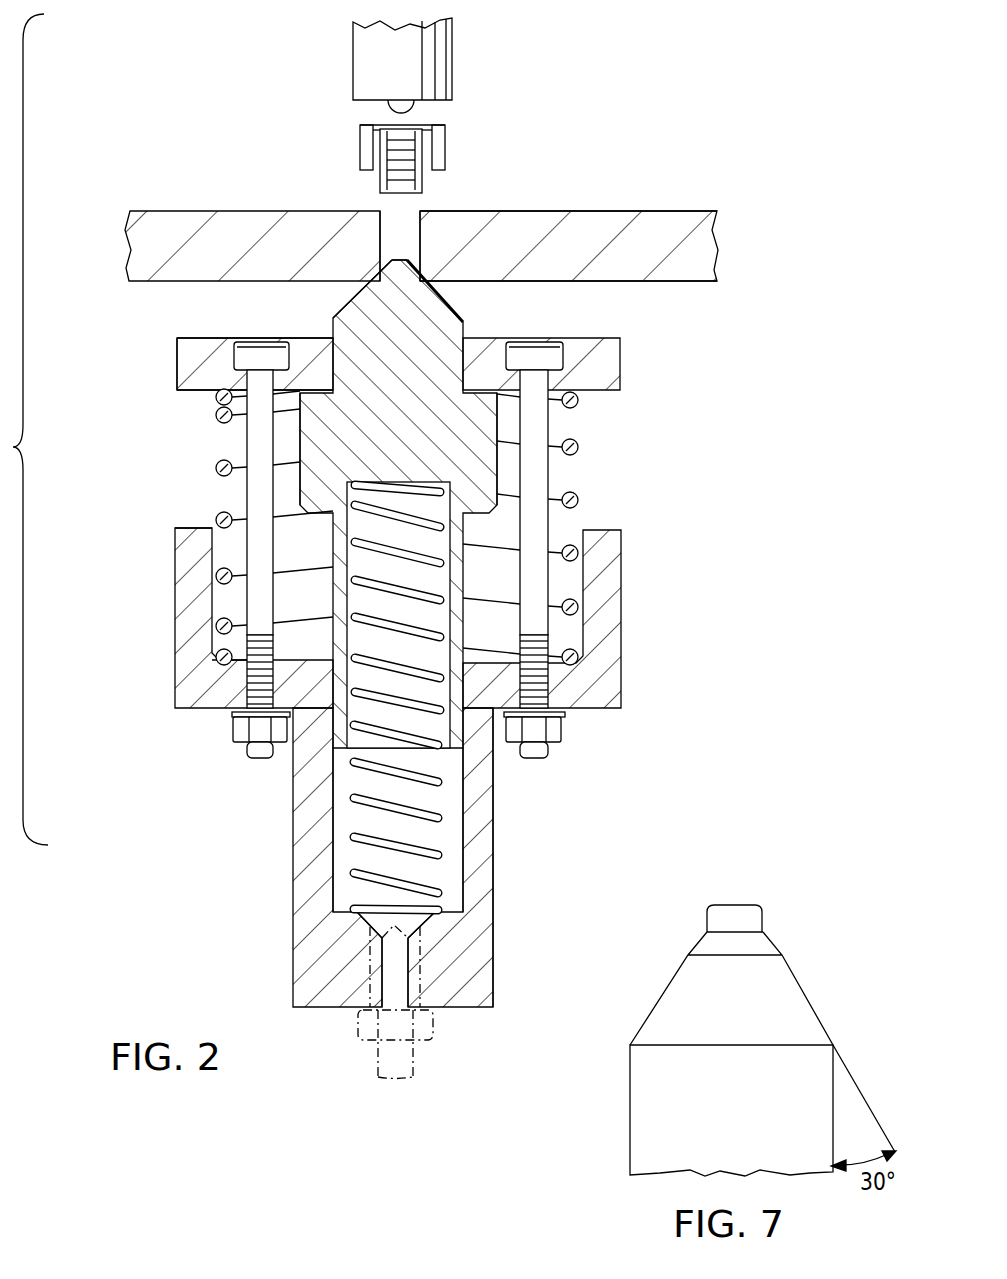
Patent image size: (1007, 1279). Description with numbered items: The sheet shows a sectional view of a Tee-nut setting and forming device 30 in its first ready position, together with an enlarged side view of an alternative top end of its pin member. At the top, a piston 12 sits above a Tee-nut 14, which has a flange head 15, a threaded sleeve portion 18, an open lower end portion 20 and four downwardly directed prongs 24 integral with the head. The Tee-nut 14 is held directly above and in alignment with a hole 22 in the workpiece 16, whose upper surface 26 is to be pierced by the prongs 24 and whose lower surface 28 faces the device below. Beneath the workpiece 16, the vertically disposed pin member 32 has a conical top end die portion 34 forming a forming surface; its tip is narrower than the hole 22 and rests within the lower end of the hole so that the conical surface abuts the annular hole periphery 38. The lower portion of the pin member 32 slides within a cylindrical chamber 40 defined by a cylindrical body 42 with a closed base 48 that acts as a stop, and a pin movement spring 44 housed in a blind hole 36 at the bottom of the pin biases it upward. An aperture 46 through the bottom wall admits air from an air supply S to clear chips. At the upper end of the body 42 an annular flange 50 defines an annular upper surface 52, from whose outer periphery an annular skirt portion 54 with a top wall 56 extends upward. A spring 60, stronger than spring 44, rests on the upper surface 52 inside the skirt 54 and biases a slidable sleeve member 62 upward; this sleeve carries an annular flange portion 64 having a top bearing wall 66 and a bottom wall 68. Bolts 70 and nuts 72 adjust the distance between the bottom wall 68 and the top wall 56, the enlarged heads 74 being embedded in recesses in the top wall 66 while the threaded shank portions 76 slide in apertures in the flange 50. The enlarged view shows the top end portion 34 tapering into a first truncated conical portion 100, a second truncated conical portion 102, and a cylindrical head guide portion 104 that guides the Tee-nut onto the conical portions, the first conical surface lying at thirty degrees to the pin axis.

In FIG. 2, the piston 12 is at (406, 75).
In FIG. 2, the Tee-nut 14 is at (462, 117).
In FIG. 2, the flange head 15 is at (377, 125).
In FIG. 2, the workpiece 16 is at (581, 263).
In FIG. 2, the threaded sleeve portion 18 is at (389, 180).
In FIG. 2, the open lower end portion 20 is at (403, 195).
In FIG. 2, the hole 22 is at (402, 231).
In FIG. 2, the prongs 24 is at (366, 166).
In FIG. 2, the upper surface 26 is at (668, 211).
In FIG. 2, the lower surface 28 is at (683, 282).
In FIG. 2, the Tee-nut forming device 30 is at (150, 360).
In FIG. 2, the pin member 32 is at (418, 435).
In FIG. 7, the pin member 32 is at (747, 1113).
In FIG. 2, the conical top end die portion 34 is at (366, 286).
In FIG. 2, the blind hole 36 is at (440, 728).
In FIG. 2, the annular hole periphery 38 is at (378, 278).
In FIG. 2, the cylindrical chamber 40 is at (350, 816).
In FIG. 2, the cylindrical body 42 is at (495, 848).
In FIG. 2, the pin movement spring 44 is at (333, 838).
In FIG. 2, the aperture 46 is at (393, 993).
In FIG. 2, the closed base 48 is at (450, 912).
In FIG. 2, the annular flange 50 is at (200, 707).
In FIG. 2, the annular upper surface 52 is at (240, 660).
In FIG. 2, the annular skirt portion 54 is at (175, 590).
In FIG. 2, the top wall 56 is at (196, 528).
In FIG. 2, the spring 60 is at (577, 497).
In FIG. 2, the slidable sleeve member 62 is at (500, 462).
In FIG. 2, the annular flange portion 64 is at (624, 373).
In FIG. 2, the top bearing wall 66 is at (188, 338).
In FIG. 2, the bottom wall 68 is at (200, 392).
In FIG. 2, the bolts 70 is at (240, 437).
In FIG. 2, the nuts 72 is at (238, 735).
In FIG. 2, the enlarged heads 74 is at (258, 356).
In FIG. 2, the threaded shank portions 76 is at (246, 676).
In FIG. 2, the air supply S is at (387, 1062).
In FIG. 7, the first truncated conical portion 100 is at (660, 995).
In FIG. 7, the second truncated conical portion 102 is at (768, 935).
In FIG. 7, the cylindrical head guide portion 104 is at (701, 903).